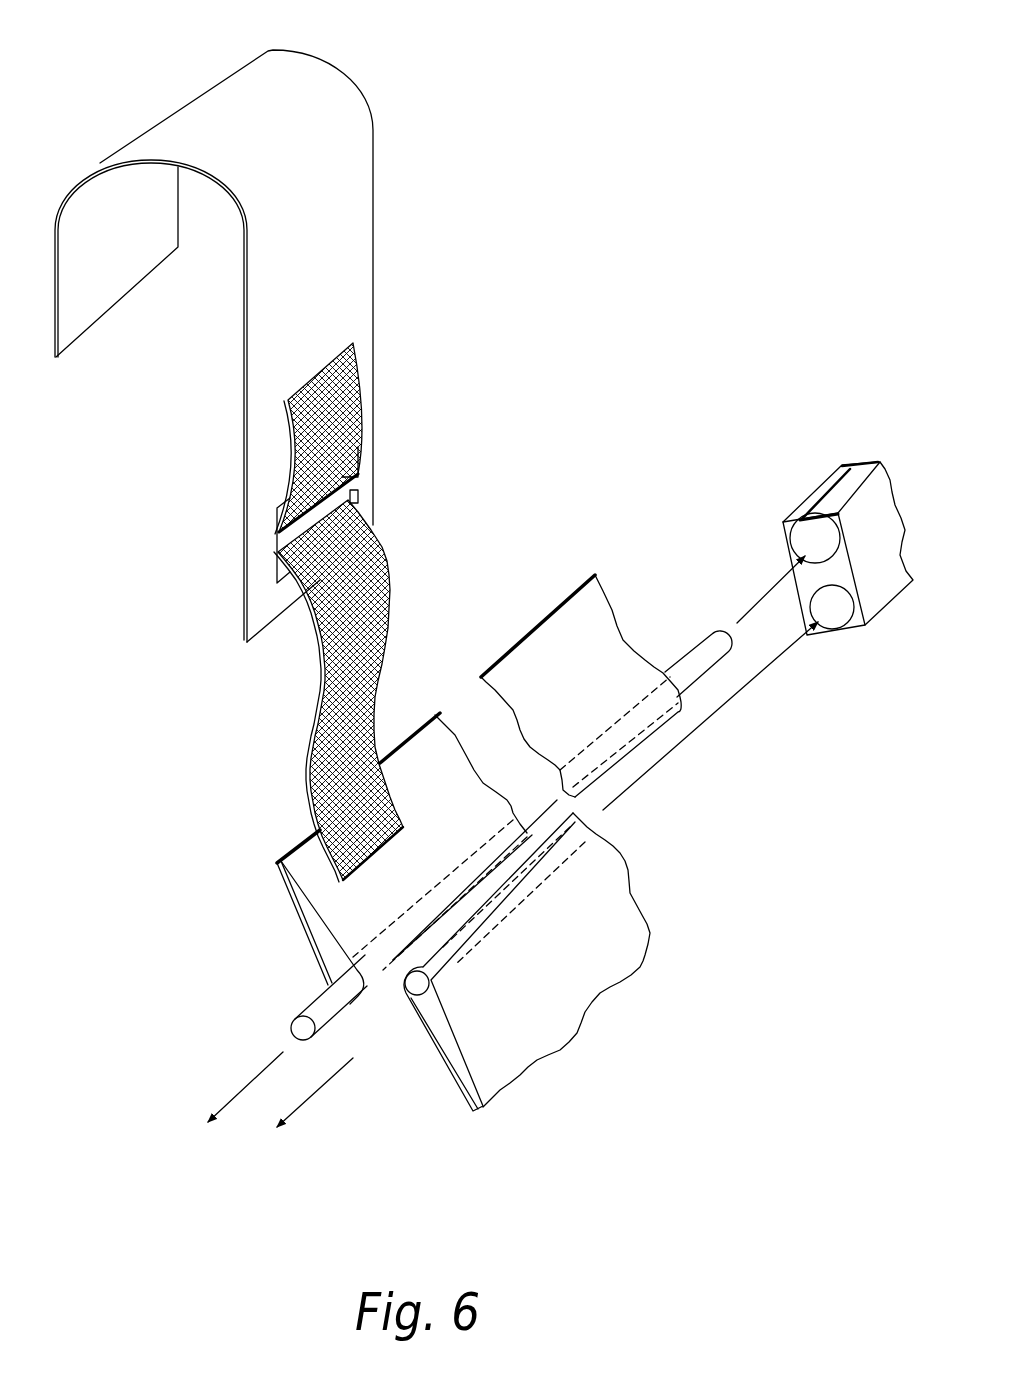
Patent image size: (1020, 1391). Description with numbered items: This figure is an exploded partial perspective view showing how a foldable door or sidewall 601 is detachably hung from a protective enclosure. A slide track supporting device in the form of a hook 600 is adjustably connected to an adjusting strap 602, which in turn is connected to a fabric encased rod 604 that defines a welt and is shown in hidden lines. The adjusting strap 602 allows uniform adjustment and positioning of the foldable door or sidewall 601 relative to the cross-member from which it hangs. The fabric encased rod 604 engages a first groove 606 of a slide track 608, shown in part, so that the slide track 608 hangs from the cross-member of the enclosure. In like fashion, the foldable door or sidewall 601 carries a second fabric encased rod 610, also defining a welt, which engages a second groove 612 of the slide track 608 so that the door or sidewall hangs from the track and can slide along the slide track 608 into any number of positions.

The hook 600 is at (383, 88).
The foldable door or sidewall 601 is at (563, 997).
The adjusting strap 602 is at (398, 655).
The fabric encased rod 604 is at (287, 982).
The first groove 606 is at (793, 547).
The slide track 608 is at (887, 517).
The second fabric encased rod 610 is at (401, 1032).
The second groove 612 is at (832, 622).